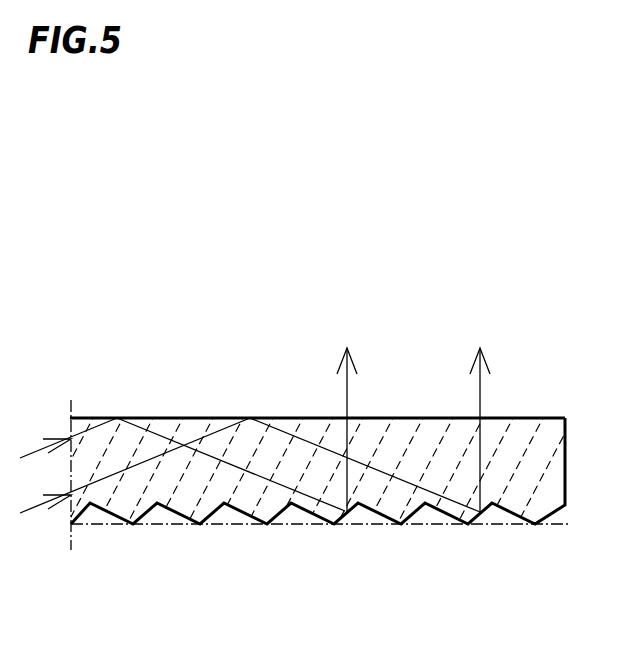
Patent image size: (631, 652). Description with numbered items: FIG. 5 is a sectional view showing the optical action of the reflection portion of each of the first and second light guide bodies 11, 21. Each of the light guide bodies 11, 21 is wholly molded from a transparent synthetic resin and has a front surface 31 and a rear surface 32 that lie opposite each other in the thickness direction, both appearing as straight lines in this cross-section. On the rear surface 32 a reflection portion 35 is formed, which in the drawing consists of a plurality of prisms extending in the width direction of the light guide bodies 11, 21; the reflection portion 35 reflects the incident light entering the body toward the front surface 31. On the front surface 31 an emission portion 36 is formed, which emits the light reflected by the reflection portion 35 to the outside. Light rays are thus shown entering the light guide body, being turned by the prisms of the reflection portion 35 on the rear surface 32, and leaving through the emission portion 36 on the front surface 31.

The first light guide body 11 is at (257, 392).
The second light guide body 21 is at (250, 393).
The front surface 31 is at (165, 418).
The rear surface 32 is at (157, 528).
The reflection portion 35 is at (357, 528).
The emission portion 36 is at (415, 410).